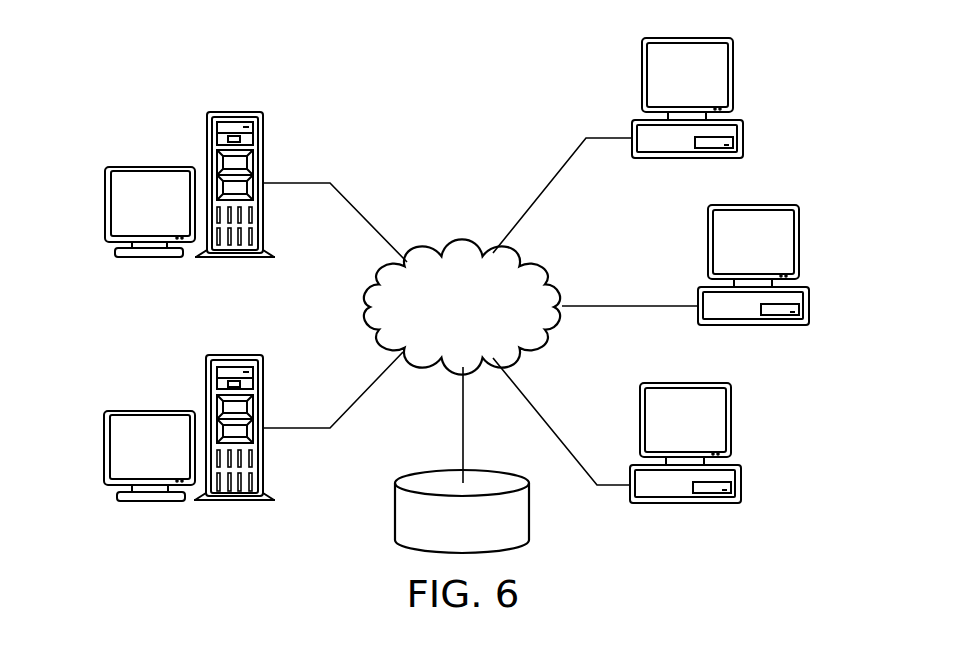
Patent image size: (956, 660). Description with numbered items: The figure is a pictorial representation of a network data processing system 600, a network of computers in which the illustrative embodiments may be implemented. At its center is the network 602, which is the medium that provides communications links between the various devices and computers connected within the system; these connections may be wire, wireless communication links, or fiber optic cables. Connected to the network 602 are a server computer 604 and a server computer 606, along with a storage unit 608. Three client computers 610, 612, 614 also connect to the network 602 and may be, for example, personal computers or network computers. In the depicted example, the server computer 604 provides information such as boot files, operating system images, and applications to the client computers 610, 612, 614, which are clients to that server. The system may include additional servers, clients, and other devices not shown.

The network data processing system 600 is at (337, 101).
The network 602 is at (457, 247).
The server computer 604 is at (104, 205).
The server computer 606 is at (103, 445).
The storage unit 608 is at (395, 510).
The client computer 610 is at (743, 127).
The client computer 612 is at (810, 317).
The client computer 614 is at (742, 495).